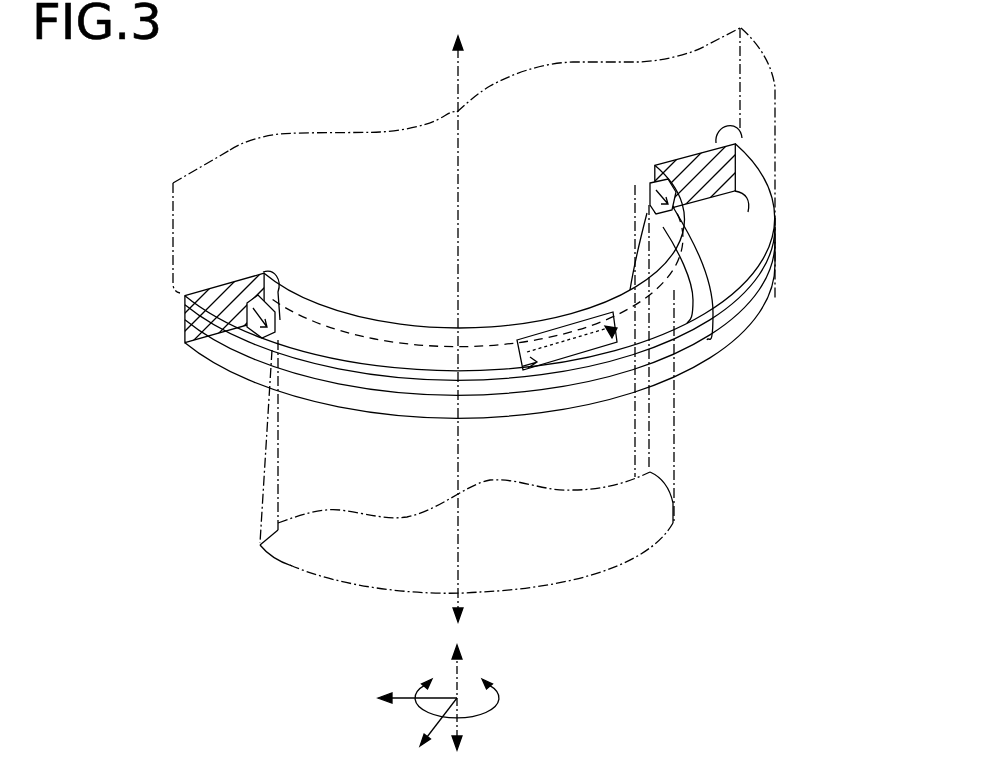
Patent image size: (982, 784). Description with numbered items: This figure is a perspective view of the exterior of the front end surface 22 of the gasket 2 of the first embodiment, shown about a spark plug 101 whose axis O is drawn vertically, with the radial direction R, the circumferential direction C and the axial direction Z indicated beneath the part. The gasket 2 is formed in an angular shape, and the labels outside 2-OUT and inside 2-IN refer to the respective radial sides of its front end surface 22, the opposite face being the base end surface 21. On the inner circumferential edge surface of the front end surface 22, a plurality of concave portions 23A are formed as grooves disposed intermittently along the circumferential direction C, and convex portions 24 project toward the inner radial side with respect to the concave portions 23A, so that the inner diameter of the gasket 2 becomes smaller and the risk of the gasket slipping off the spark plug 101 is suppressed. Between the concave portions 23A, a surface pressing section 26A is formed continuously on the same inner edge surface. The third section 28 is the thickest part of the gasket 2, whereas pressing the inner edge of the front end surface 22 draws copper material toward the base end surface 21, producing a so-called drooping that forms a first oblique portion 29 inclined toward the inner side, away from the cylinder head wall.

The gasket 2 is at (248, 381).
The base end surface 21 is at (740, 125).
The front end surface 22 is at (735, 205).
The concave portions 23A is at (235, 343).
The convex portions 24 is at (652, 172).
The surface pressing section 26A is at (692, 298).
The third section 28 is at (684, 355).
The first oblique portion 29 is at (688, 316).
The spark plug 101 is at (268, 490).
The central axis O is at (471, 32).
The inside of the gasket 2-IN is at (262, 270).
The outside of the gasket 2-OUT is at (183, 293).
The radial direction R is at (415, 710).
The circumferential direction C is at (505, 707).
The axial direction Z is at (460, 730).